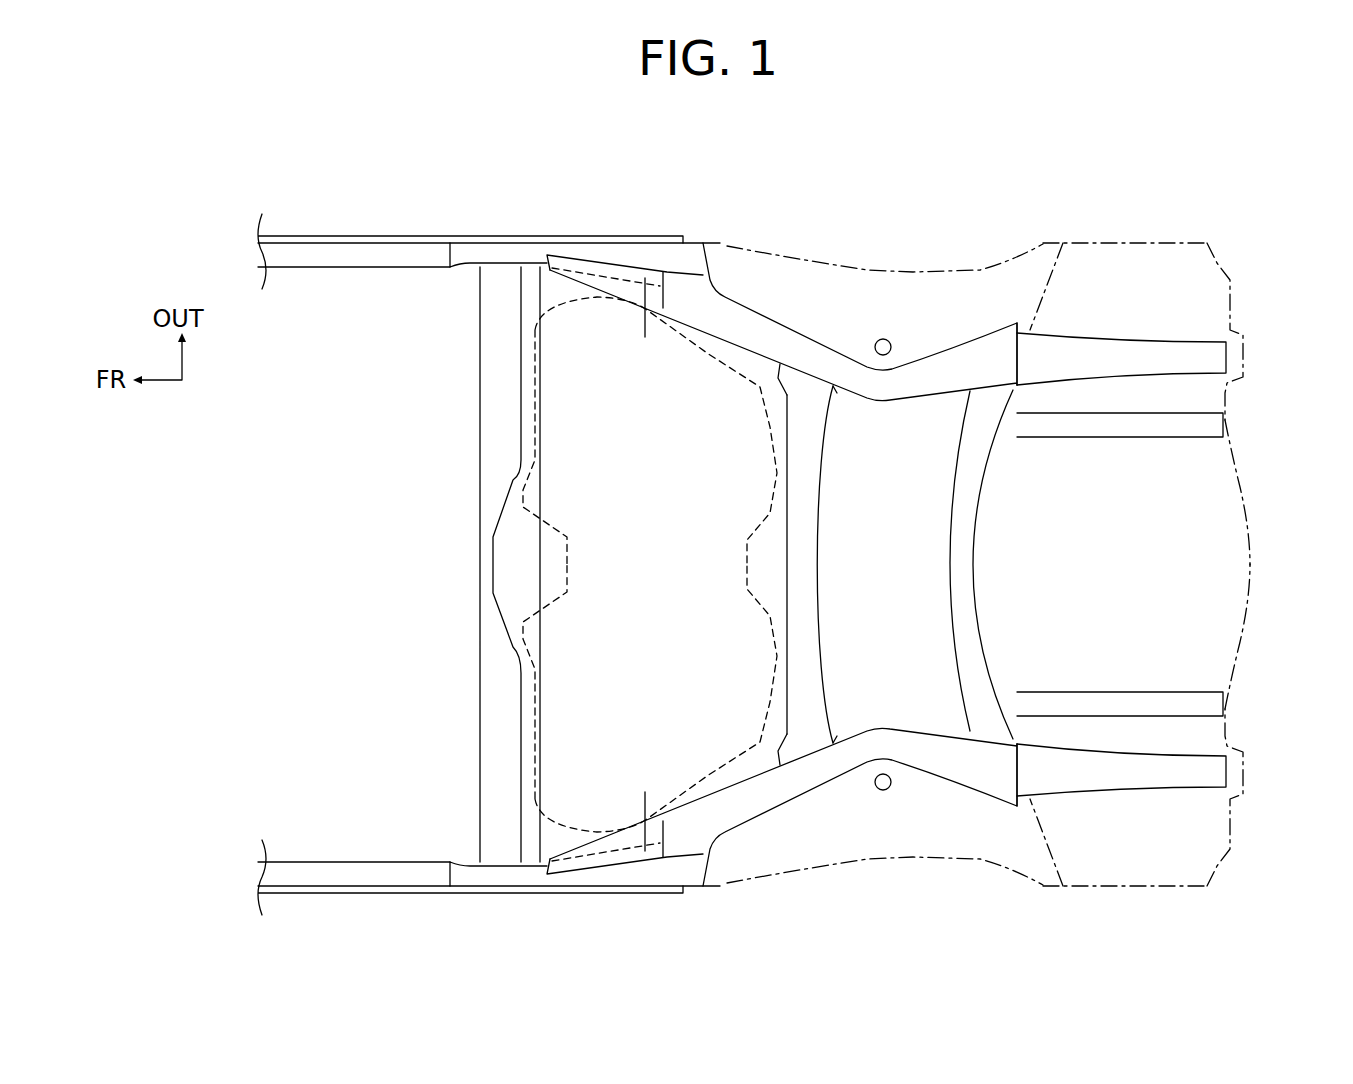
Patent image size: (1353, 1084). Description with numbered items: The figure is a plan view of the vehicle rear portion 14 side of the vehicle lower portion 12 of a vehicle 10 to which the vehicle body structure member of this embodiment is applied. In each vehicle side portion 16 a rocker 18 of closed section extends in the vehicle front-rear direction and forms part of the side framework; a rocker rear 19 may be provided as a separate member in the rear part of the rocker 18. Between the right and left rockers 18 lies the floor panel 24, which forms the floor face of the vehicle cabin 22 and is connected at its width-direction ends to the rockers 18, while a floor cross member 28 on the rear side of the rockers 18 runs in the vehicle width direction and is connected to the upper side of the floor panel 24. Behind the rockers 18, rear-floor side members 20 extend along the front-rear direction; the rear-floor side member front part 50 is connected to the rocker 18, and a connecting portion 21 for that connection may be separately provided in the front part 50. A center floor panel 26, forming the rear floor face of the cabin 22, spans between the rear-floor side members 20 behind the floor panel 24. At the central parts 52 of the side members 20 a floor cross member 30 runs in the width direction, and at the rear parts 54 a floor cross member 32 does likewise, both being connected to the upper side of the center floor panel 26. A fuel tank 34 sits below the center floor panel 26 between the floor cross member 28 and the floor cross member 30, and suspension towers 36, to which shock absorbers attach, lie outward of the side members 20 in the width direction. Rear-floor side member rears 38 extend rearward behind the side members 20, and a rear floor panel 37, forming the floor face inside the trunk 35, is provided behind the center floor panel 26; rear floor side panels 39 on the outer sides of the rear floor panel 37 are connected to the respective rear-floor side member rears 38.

The vehicle 10 is at (995, 203).
The vehicle lower portion 12 is at (740, 225).
The vehicle rear portion 14 is at (845, 260).
The vehicle side portion 16 is at (397, 222).
The rocker 18 is at (365, 275).
The rocker rear 19 is at (500, 257).
The rear-floor side member 20 is at (908, 363).
The connecting portion 21 is at (637, 287).
The vehicle cabin 22 is at (303, 363).
The floor panel 24 is at (312, 270).
The center floor panel 26 is at (643, 337).
The floor cross member 28 is at (492, 513).
The floor cross member 30 is at (810, 543).
The floor cross member 32 is at (957, 557).
The fuel tank 34 is at (560, 437).
The trunk 35 is at (1088, 552).
The suspension tower 36 is at (876, 340).
The rear floor panel 37 is at (1197, 527).
The rear-floor side member rear 38 is at (1147, 350).
The rear floor side panel 39 is at (1197, 302).
The rear-floor side member front part 50 is at (677, 300).
The central part 52 is at (790, 357).
The rear part 54 is at (1002, 378).